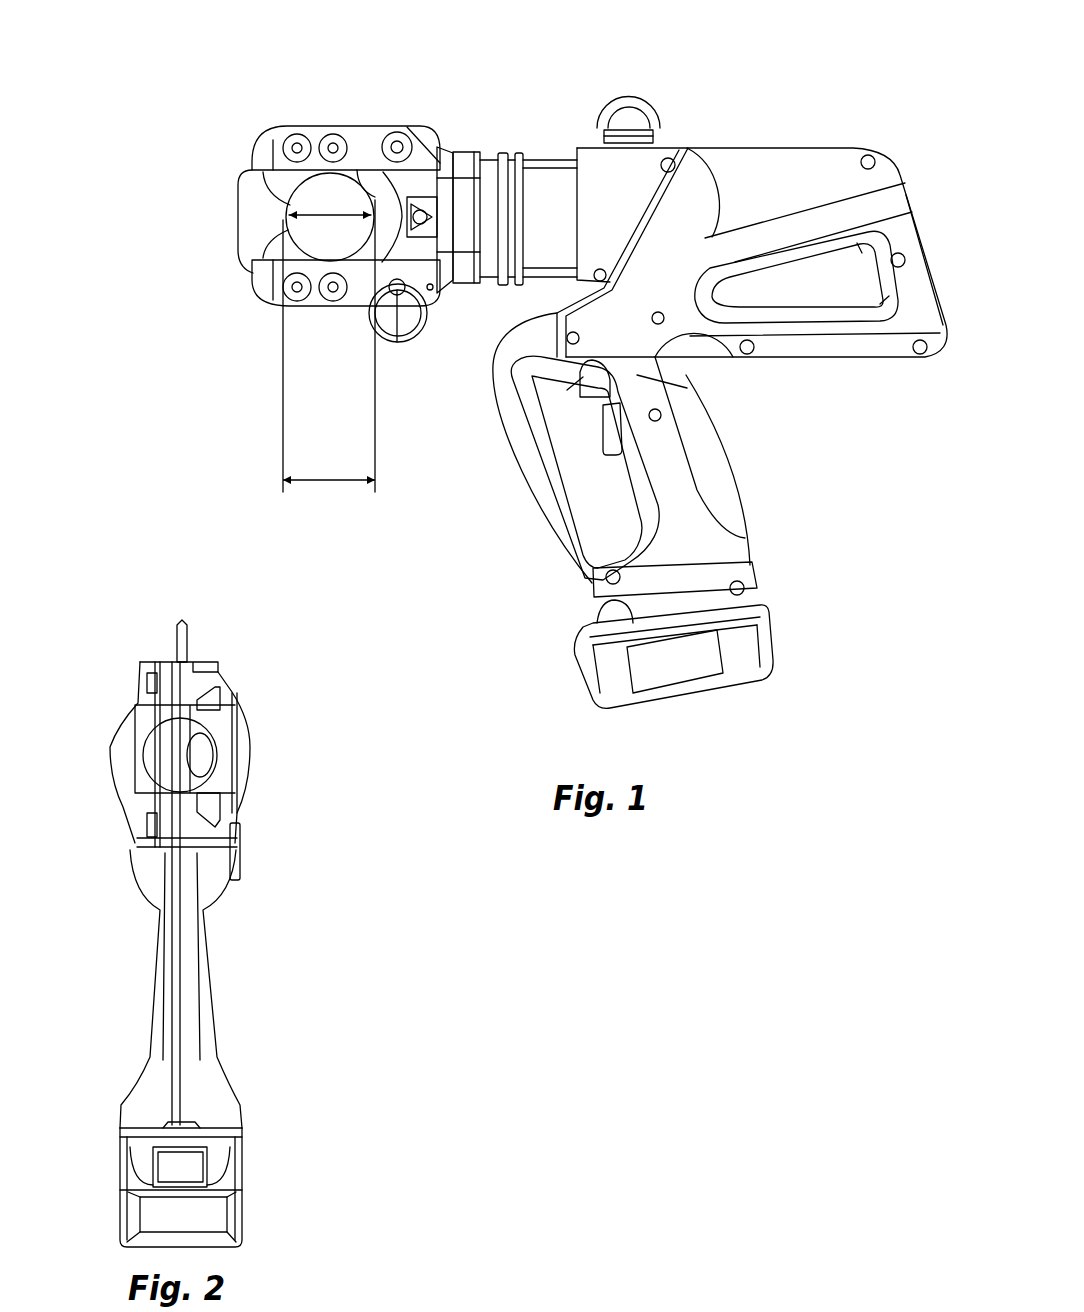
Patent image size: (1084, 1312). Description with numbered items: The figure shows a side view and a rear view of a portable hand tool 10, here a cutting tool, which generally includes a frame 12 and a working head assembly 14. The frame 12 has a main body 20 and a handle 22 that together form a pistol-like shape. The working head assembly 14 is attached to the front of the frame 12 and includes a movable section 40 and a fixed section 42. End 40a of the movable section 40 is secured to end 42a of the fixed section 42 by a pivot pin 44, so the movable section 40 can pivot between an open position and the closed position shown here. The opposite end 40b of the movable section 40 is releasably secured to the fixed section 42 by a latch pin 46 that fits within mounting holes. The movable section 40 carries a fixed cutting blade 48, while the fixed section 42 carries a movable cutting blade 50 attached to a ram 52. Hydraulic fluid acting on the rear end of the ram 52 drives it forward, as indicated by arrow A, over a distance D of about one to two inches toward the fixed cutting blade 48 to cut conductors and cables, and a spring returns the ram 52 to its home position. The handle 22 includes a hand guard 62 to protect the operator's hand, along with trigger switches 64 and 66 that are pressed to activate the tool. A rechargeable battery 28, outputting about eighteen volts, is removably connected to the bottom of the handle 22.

In FIG. 1, the tool 10 is at (569, 355).
In FIG. 2, the tool 10 is at (172, 906).
In FIG. 1, the frame 12 is at (719, 372).
In FIG. 2, the frame 12 is at (219, 1005).
In FIG. 1, the working head assembly 14 is at (377, 287).
In FIG. 2, the working head assembly 14 is at (206, 750).
In FIG. 1, the main body 20 is at (914, 207).
In FIG. 1, the handle 22 is at (748, 562).
In FIG. 1, the battery 28 is at (768, 660).
In FIG. 2, the battery 28 is at (120, 1225).
In FIG. 1, the movable section 40 is at (237, 228).
In FIG. 1, the end of the movable section 40a is at (383, 135).
In FIG. 1, the end of the movable section 40b is at (360, 303).
In FIG. 1, the fixed section 42 is at (465, 165).
In FIG. 1, the end of fixed section 42a is at (428, 143).
In FIG. 1, the pivot pin 44 is at (393, 135).
In FIG. 1, the latch pin 46 is at (395, 342).
In FIG. 2, the latch pin 46 is at (246, 822).
In FIG. 1, the fixed cutting blade 48 is at (257, 178).
In FIG. 1, the movable cutting blade 50 is at (362, 168).
In FIG. 1, the ram 52 is at (428, 232).
In FIG. 1, the hand guard 62 is at (527, 500).
In FIG. 1, the trigger switch 64 is at (607, 430).
In FIG. 1, the trigger switch 66 is at (585, 380).